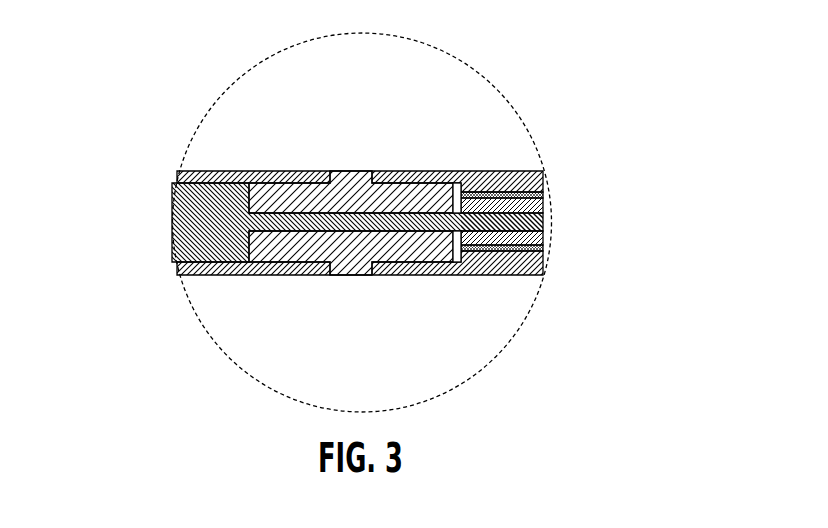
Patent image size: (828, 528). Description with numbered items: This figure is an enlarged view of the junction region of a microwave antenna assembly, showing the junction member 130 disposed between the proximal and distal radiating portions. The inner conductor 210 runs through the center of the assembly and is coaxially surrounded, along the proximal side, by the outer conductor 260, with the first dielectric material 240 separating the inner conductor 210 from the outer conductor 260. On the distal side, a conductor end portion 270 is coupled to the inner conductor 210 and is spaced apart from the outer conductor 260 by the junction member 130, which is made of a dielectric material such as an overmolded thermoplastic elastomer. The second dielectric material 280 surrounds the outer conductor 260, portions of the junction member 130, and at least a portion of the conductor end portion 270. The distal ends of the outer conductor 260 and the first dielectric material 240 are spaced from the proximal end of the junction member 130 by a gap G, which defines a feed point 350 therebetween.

The junction member 130 is at (347, 169).
The second dielectric material 280 is at (195, 178).
The conductor end portion 270 is at (187, 225).
The inner conductor 210 is at (543, 221).
The first dielectric material 240 is at (543, 207).
The outer conductor 260 is at (543, 196).
The gap G is at (453, 169).
The feed point 350 is at (455, 277).